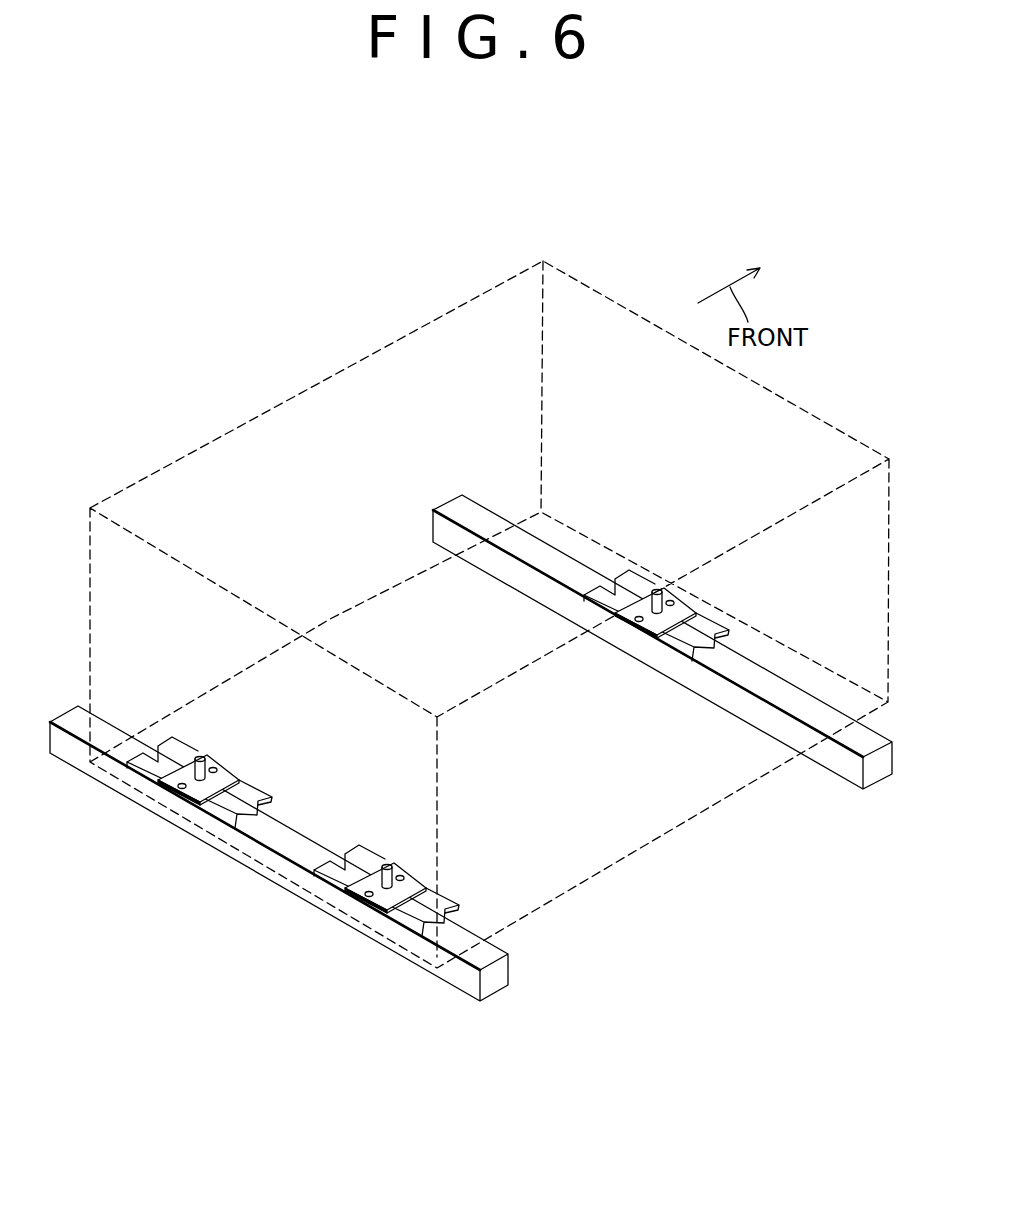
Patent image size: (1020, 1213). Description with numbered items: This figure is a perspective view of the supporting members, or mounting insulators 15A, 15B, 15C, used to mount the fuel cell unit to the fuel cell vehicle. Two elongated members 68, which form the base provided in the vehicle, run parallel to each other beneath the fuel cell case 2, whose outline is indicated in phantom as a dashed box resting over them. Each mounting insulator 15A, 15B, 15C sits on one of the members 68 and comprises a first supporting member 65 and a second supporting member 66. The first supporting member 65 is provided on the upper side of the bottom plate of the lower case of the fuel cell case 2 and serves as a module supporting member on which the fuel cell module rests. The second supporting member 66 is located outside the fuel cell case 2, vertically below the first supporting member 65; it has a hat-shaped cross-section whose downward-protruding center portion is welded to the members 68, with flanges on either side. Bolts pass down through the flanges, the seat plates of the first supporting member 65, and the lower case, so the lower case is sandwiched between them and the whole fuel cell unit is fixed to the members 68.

The fuel cell case 2 is at (300, 383).
The mounting insulator 15A is at (224, 740).
The mounting insulator 15B is at (452, 858).
The mounting insulator 15C is at (756, 603).
The first supporting member 65 is at (222, 770).
The second supporting member 66 is at (212, 797).
The members 68 is at (280, 882).